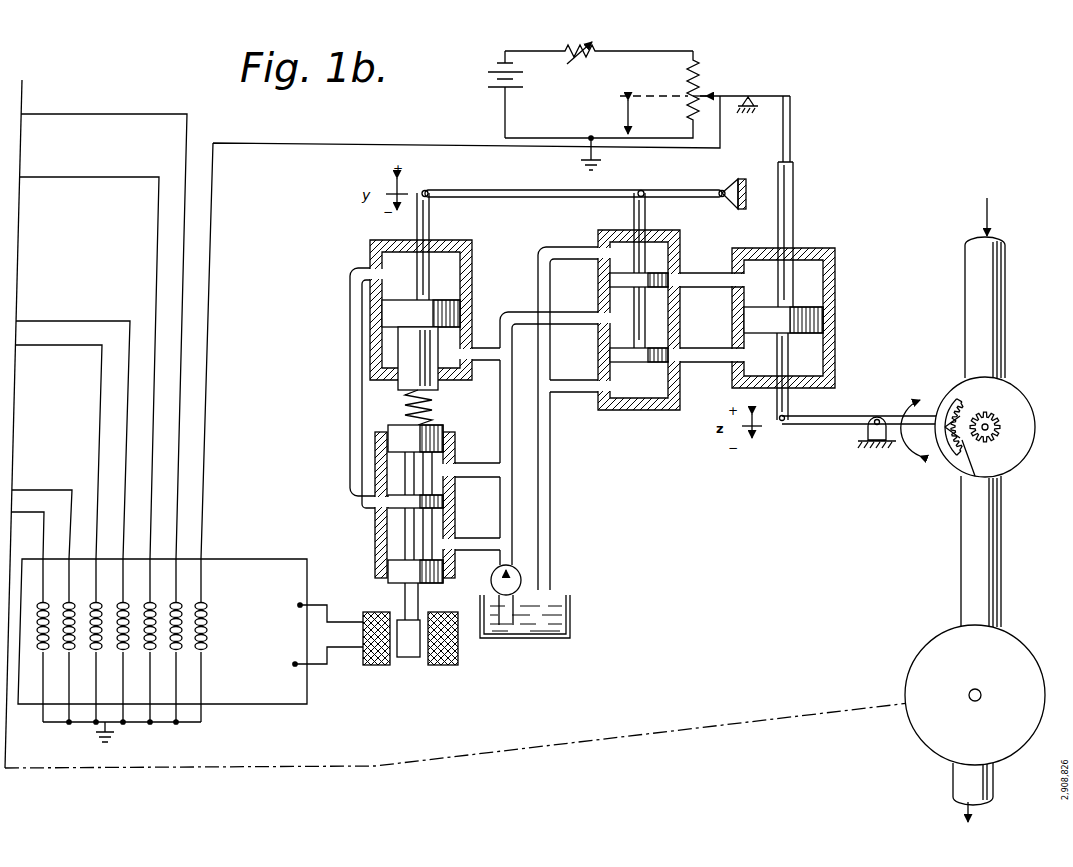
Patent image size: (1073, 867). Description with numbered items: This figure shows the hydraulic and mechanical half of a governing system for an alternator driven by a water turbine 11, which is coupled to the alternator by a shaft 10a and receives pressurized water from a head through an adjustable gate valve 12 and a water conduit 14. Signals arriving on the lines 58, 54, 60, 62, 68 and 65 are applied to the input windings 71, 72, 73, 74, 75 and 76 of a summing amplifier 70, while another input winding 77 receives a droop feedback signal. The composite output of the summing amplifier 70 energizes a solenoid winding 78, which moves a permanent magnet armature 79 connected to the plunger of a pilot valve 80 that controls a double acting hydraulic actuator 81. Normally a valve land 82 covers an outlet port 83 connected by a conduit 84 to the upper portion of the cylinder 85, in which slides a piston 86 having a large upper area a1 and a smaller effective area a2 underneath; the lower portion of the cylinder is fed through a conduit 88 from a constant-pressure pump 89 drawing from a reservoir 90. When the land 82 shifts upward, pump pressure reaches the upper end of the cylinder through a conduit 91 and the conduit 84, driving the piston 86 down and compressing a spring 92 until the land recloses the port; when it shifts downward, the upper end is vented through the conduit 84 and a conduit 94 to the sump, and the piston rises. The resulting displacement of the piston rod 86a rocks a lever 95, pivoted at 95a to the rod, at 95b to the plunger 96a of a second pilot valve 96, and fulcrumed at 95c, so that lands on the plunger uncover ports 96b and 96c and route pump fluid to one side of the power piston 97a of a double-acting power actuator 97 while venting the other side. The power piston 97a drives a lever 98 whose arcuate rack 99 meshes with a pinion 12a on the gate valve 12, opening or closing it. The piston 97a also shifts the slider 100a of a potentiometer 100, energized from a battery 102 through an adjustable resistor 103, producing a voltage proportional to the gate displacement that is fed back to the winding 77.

The shaft 10a is at (550, 762).
The water turbine 11 is at (946, 642).
The gate valve 12 is at (1010, 378).
The pinion 12a is at (990, 444).
The water conduit 14 is at (1005, 302).
The line 54 is at (70, 177).
The line 58 is at (95, 114).
The line 60 is at (64, 345).
The line 62 is at (60, 321).
The line 65 is at (24, 512).
The line 68 is at (33, 490).
The summing amplifier 70 is at (226, 560).
The input winding 71 is at (176, 660).
The input winding 72 is at (150, 660).
The input winding 73 is at (123, 660).
The input winding 74 is at (96, 660).
The input winding 75 is at (69, 660).
The input winding 76 is at (43, 660).
The input winding 77 is at (203, 655).
The solenoid winding 78 is at (382, 665).
The permanent magnet armature 79 is at (410, 657).
The pilot valve 80 is at (374, 552).
The hydraulic actuator 81 is at (476, 247).
The valve land 82 is at (443, 502).
The outlet port 83 is at (380, 508).
The conduit 84 is at (350, 412).
The cylinder 85 is at (462, 273).
The piston 86 is at (418, 358).
The piston rod 86a is at (430, 212).
The conduit 88 is at (488, 364).
The constant-pressure pump 89 is at (490, 582).
The reservoir 90 is at (530, 638).
The conduit 91 is at (465, 538).
The spring 92 is at (432, 406).
The conduit 94 is at (468, 462).
The lever 95 is at (520, 192).
The pivot 95a is at (430, 186).
The pivot 95b is at (645, 186).
The fulcrum 95c is at (736, 176).
The pilot valve 96 is at (705, 298).
The plunger 96a is at (646, 212).
The port 96b is at (690, 276).
The port 96c is at (683, 362).
The power actuator 97 is at (838, 286).
The power piston 97a is at (810, 310).
The lever 98 is at (812, 428).
The arcuate rack 99 is at (970, 478).
The potentiometer 100 is at (700, 68).
The slider 100a is at (720, 92).
The battery 102 is at (488, 72).
The adjustable resistor 103 is at (587, 56).
The upper area a1 is at (402, 300).
The effective area a2 is at (392, 325).